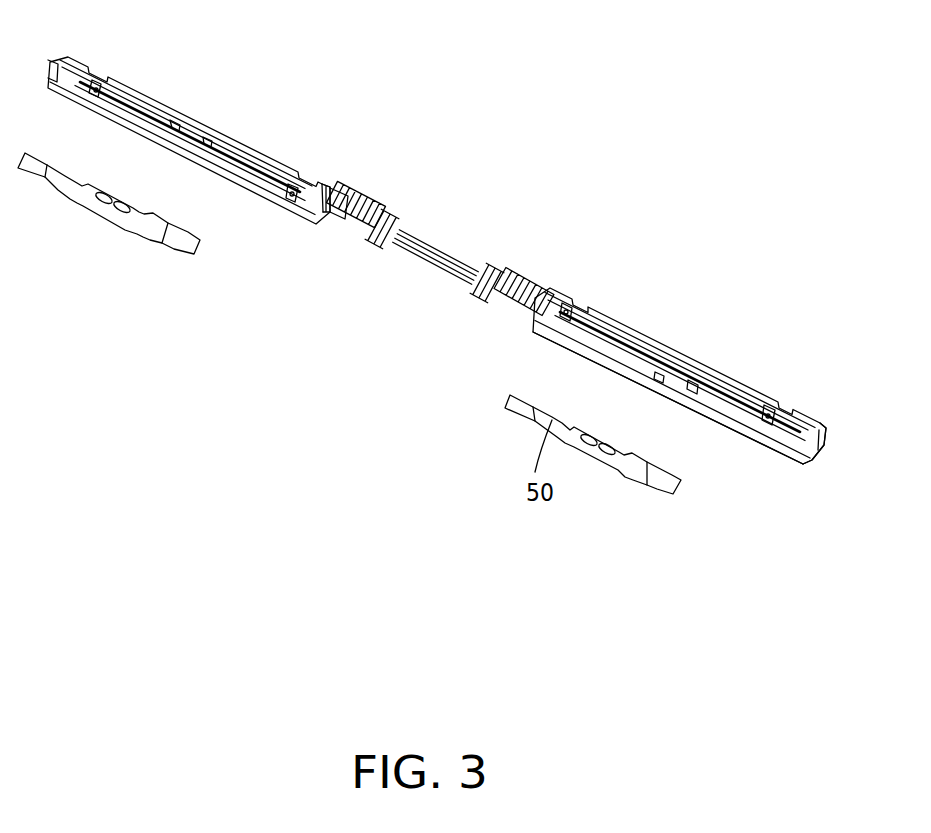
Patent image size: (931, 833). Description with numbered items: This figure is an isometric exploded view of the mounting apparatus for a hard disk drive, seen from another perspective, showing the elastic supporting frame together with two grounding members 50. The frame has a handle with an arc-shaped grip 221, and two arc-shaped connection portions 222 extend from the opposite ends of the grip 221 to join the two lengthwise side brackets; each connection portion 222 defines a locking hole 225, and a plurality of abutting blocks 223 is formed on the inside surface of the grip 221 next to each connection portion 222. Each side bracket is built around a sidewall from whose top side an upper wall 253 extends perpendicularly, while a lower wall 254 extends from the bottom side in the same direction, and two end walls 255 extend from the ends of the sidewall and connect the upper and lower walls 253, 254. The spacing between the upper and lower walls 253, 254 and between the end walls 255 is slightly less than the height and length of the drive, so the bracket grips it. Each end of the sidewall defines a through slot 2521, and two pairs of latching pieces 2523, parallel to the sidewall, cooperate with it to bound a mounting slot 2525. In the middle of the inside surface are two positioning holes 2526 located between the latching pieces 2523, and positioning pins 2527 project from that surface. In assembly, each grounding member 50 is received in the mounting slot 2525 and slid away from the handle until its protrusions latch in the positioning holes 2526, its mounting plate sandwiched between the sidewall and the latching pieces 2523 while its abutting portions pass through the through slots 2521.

The grounding member 50 is at (163, 230).
The grip 221 is at (427, 240).
The connection portion 222 is at (360, 190).
The abutting block 223 is at (363, 238).
The locking hole 225 is at (336, 180).
The upper wall 253 is at (660, 350).
The lower wall 254 is at (738, 422).
The end wall 255 is at (813, 458).
The through slot 2521 is at (610, 342).
The latching piece 2523 is at (687, 400).
The mounting slot 2525 is at (660, 377).
The positioning hole 2526 is at (693, 387).
The positioning pin 2527 is at (763, 412).